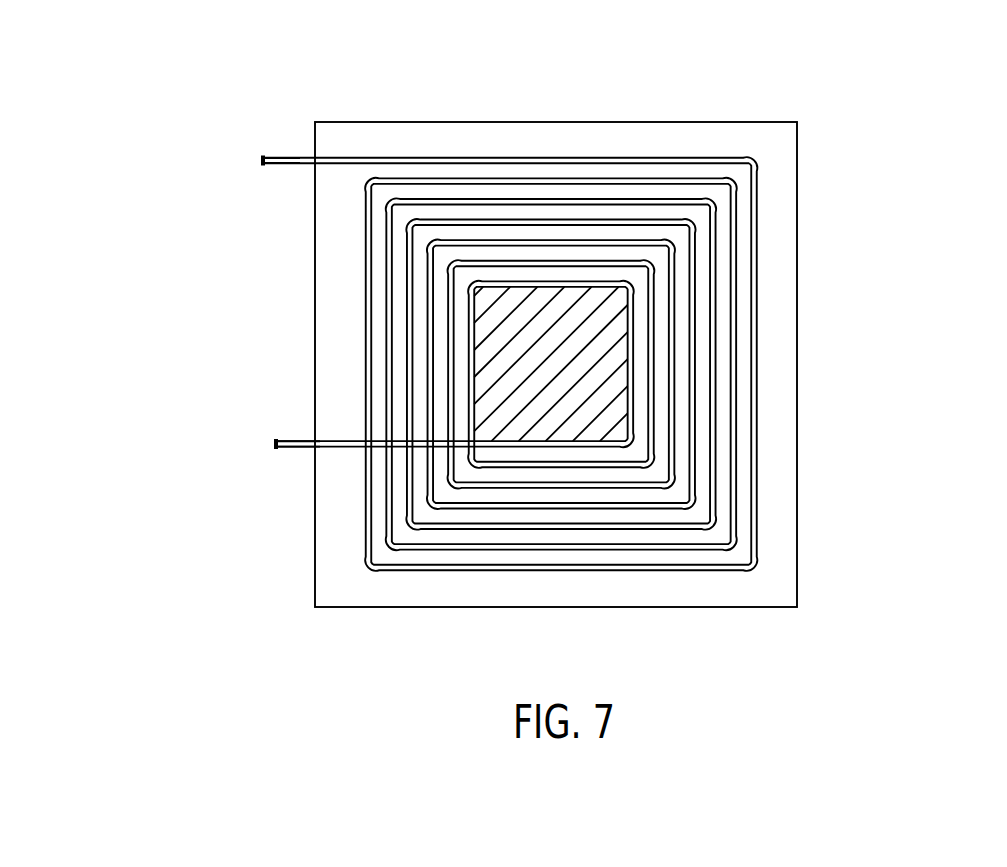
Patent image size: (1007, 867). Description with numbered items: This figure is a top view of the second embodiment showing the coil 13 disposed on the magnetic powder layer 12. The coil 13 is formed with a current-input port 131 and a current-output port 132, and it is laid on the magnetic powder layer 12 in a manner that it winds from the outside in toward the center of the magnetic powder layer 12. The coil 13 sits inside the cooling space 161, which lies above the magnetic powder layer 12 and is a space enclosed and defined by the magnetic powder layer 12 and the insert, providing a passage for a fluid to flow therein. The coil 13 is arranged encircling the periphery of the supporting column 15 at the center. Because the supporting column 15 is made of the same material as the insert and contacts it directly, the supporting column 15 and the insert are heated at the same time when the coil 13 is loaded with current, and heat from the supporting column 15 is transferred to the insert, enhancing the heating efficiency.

The magnetic powder layer 12 is at (777, 170).
The coil 13 is at (615, 364).
The cooling space 161 is at (742, 240).
The supporting column 15 is at (573, 403).
The current-input port 131 is at (262, 158).
The current-output port 132 is at (275, 443).